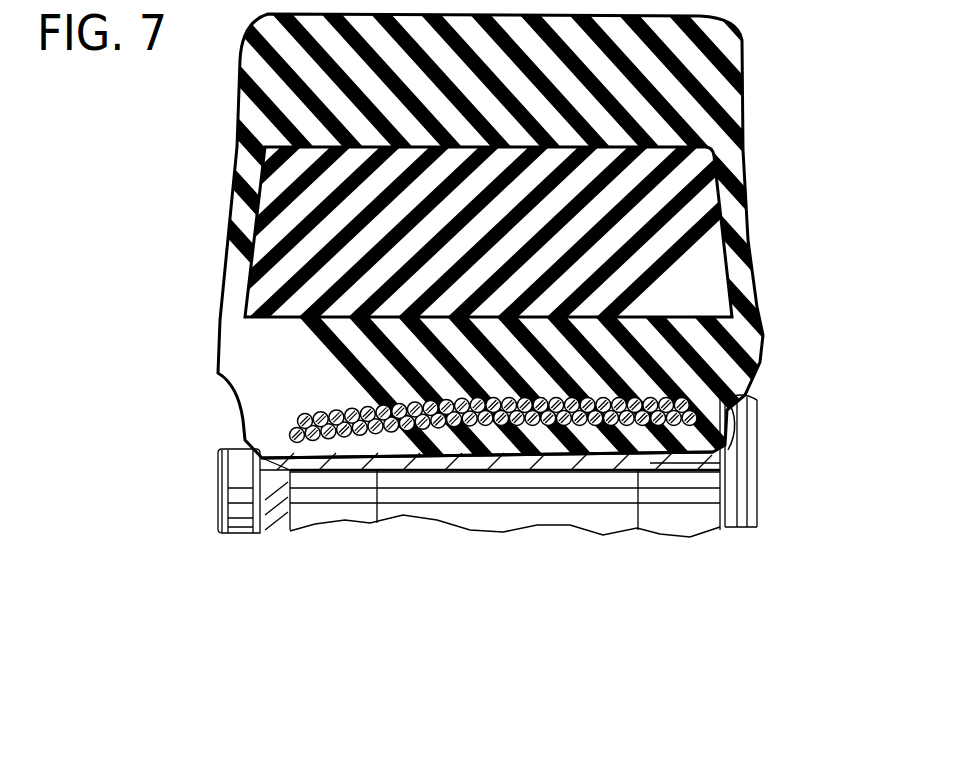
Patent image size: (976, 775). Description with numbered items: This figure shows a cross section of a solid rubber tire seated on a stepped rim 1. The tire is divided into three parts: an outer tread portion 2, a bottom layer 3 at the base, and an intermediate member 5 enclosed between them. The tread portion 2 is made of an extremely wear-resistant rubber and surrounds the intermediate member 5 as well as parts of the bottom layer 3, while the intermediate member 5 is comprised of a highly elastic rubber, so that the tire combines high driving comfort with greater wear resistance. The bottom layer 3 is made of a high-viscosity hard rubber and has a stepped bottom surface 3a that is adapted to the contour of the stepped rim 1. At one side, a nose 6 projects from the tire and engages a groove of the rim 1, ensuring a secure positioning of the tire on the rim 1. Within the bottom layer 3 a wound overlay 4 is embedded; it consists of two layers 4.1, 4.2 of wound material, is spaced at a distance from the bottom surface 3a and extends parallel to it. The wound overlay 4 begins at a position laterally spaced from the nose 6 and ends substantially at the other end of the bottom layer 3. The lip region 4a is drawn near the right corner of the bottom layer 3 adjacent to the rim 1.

The rim 1 is at (722, 492).
The tread portion 2 is at (710, 80).
The bottom layer 3 is at (710, 355).
The bottom surface 3a is at (573, 453).
The wound overlay 4 is at (419, 409).
The first layer of the wound overlay 4.1 is at (272, 438).
The second layer of the wound overlay 4.2 is at (276, 421).
The edge lip 4a is at (715, 403).
The intermediate member 5 is at (700, 210).
The nose 6 is at (222, 485).